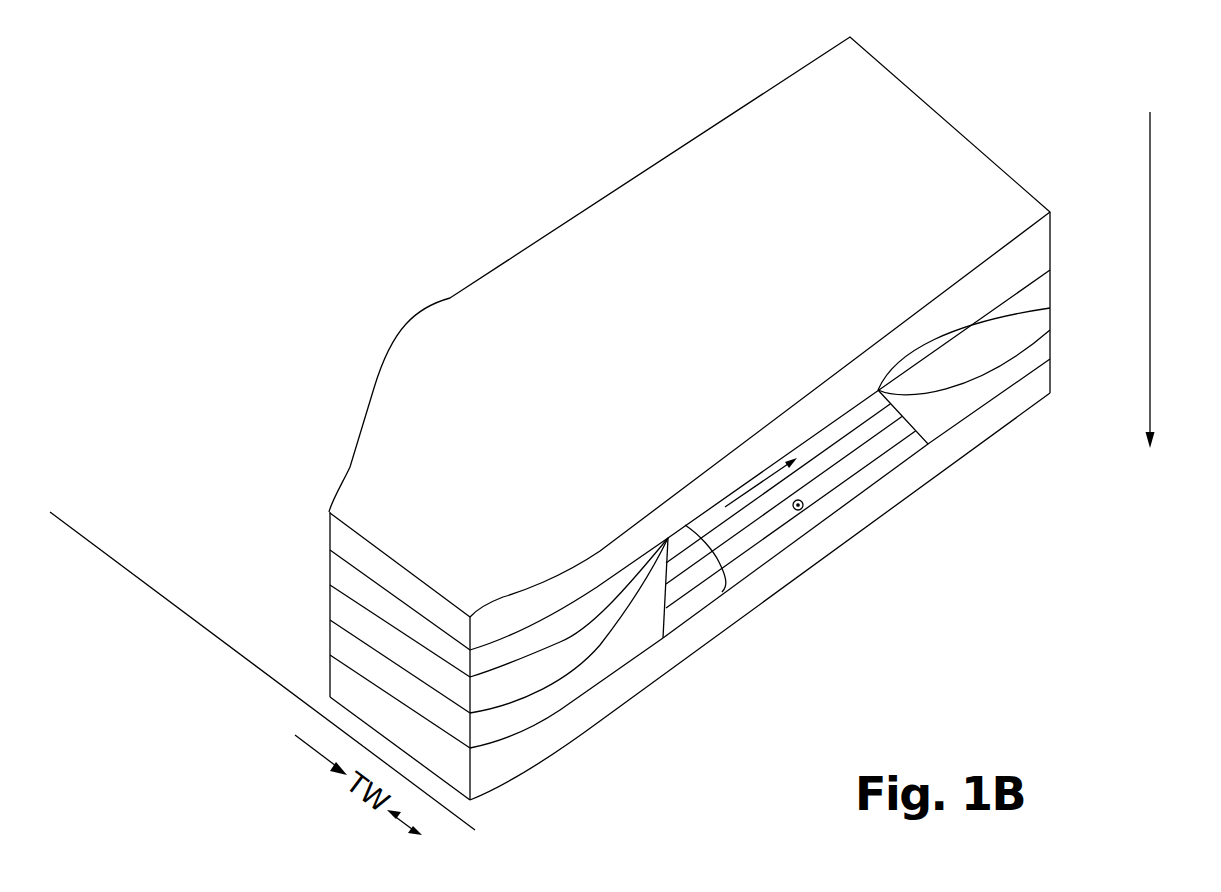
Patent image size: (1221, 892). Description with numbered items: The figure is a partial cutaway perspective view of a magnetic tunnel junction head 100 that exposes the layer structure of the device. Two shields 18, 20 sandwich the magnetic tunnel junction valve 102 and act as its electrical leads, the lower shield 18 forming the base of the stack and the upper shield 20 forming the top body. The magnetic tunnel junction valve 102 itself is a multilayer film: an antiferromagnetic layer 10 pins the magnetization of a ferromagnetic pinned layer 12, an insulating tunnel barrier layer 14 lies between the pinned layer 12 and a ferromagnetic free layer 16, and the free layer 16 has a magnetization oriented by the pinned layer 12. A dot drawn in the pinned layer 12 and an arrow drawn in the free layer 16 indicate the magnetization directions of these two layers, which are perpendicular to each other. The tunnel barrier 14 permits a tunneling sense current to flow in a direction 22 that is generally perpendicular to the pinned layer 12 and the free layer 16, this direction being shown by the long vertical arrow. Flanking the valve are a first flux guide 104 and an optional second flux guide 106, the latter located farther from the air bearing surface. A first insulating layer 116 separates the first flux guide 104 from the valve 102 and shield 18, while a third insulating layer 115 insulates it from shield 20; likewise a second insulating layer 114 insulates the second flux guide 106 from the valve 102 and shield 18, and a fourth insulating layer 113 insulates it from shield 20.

The antiferromagnetic layer 10 is at (795, 541).
The ferromagnetic pinned layer 12 is at (791, 519).
The insulating tunnel barrier layer 14 is at (784, 501).
The ferromagnetic free layer 16 is at (778, 483).
The shield 18 is at (690, 596).
The shield 20 is at (689, 418).
The sense current direction 22 is at (1170, 280).
The magnetic tunnel junction head 100 is at (1001, 536).
The magnetic tunnel junction valve 102 is at (724, 548).
The first flux guide 104 is at (499, 625).
The second flux guide 106 is at (964, 362).
The fourth insulating layer 113 is at (964, 338).
The second insulating layer 114 is at (964, 401).
The third insulating layer 115 is at (499, 607).
The first insulating layer 116 is at (499, 643).